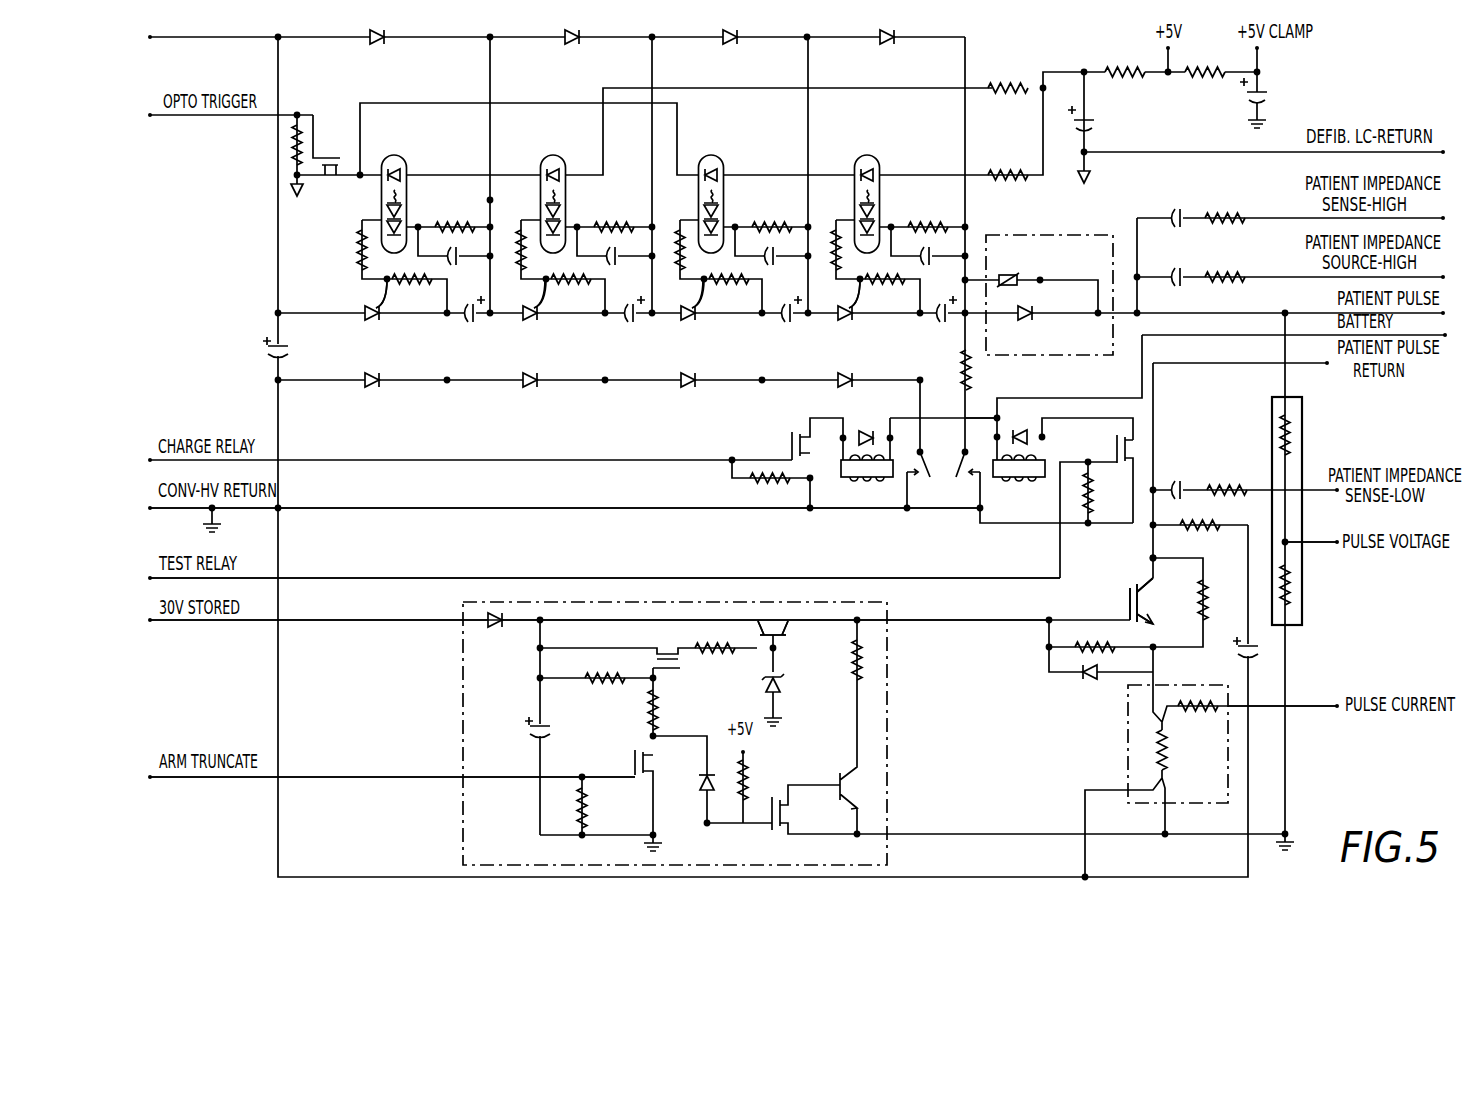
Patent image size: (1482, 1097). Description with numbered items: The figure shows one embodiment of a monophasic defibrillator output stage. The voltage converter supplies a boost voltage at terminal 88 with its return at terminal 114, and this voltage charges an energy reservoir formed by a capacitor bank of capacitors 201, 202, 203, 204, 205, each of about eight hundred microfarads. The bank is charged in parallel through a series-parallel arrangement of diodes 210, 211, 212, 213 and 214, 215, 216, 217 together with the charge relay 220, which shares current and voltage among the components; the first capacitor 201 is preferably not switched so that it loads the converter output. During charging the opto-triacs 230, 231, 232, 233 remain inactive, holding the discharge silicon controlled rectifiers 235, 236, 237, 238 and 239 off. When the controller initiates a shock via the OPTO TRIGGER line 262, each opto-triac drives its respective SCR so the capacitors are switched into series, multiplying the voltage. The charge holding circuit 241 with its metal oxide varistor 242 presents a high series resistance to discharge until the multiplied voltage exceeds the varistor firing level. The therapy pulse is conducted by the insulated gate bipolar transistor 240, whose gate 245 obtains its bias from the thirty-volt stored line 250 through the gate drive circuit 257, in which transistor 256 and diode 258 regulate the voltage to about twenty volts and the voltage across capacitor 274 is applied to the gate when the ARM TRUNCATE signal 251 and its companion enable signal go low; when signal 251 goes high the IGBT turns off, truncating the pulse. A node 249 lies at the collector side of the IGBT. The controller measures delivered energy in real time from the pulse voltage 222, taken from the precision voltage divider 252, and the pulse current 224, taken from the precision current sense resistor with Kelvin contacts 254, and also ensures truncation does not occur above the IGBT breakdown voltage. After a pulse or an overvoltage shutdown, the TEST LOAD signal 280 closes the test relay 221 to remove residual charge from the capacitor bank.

The output terminal (boost voltage) 88 is at (217, 42).
The OPTO TRIGGER line 262 is at (222, 125).
The diode 210 is at (377, 45).
The diode 211 is at (572, 45).
The diode 212 is at (730, 45).
The diode 213 is at (887, 45).
The opto-triac 230 is at (386, 154).
The opto-triac 231 is at (545, 154).
The opto-triac 232 is at (703, 154).
The opto-triac 233 is at (859, 154).
The discharge silicon controlled rectifier 235 is at (373, 323).
The discharge silicon controlled rectifier 236 is at (532, 323).
The discharge silicon controlled rectifier 237 is at (690, 323).
The discharge silicon controlled rectifier 238 is at (849, 323).
The capacitor 202 is at (477, 325).
The capacitor 203 is at (637, 325).
The capacitor 204 is at (794, 325).
The capacitor 205 is at (945, 325).
The diode 214 is at (373, 389).
The diode 215 is at (532, 389).
The diode 216 is at (690, 389).
The diode 217 is at (849, 389).
The first capacitor 201 is at (265, 348).
The charge holding circuit (MOV circuit) 241 is at (1065, 235).
The metal oxide varistor 242 is at (1010, 276).
The discharge silicon controlled rectifier 239 is at (1030, 321).
The charge relay 220 is at (876, 478).
The test relay 221 is at (1010, 478).
The precision voltage divider 252 is at (1272, 420).
The pulse voltage 222 is at (1312, 545).
The node 249 is at (1134, 559).
The gate of IGBT 245 is at (1128, 607).
The insulated gate bipolar transistor 240 is at (1142, 590).
The precision current sense resistor with Kelvin contacts 254 is at (1128, 722).
The pulse current 224 is at (1307, 712).
The gate drive circuit 257 is at (462, 690).
The capacitor 274 is at (528, 734).
The transistor 256 is at (785, 630).
The diode 258 is at (784, 680).
The output terminal (converter return) 114 is at (377, 512).
The TEST LOAD signal 280 is at (377, 581).
The 30V STORED line 250 is at (236, 628).
The ARM TRUNCATE signal 251 is at (226, 786).